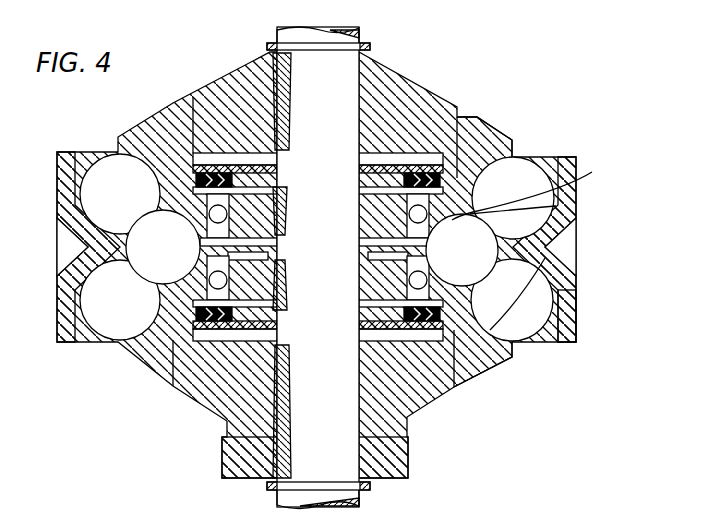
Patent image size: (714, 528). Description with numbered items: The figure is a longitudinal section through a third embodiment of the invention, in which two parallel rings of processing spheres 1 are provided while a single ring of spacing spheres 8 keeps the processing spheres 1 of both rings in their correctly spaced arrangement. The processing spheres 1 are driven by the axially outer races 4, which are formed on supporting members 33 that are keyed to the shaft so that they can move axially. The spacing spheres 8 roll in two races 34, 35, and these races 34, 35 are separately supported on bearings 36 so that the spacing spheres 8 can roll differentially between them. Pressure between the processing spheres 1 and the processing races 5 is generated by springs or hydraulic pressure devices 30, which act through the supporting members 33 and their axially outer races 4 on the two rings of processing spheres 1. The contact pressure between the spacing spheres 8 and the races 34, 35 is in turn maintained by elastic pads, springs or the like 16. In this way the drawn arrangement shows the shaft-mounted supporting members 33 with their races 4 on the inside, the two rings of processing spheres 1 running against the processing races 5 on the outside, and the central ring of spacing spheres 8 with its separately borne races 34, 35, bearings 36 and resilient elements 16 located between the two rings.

The processing spheres 1 is at (106, 170).
The axially outer races 4 is at (512, 157).
The processing races 5 is at (556, 228).
The spacing spheres 8 is at (105, 247).
The elastic pads, springs or the like 16 is at (195, 98).
The springs or hydraulic pressure devices 30 is at (408, 468).
The supporting members 33 is at (405, 90).
The race 34 is at (556, 206).
The race 35 is at (560, 312).
The bearings 36 is at (530, 351).